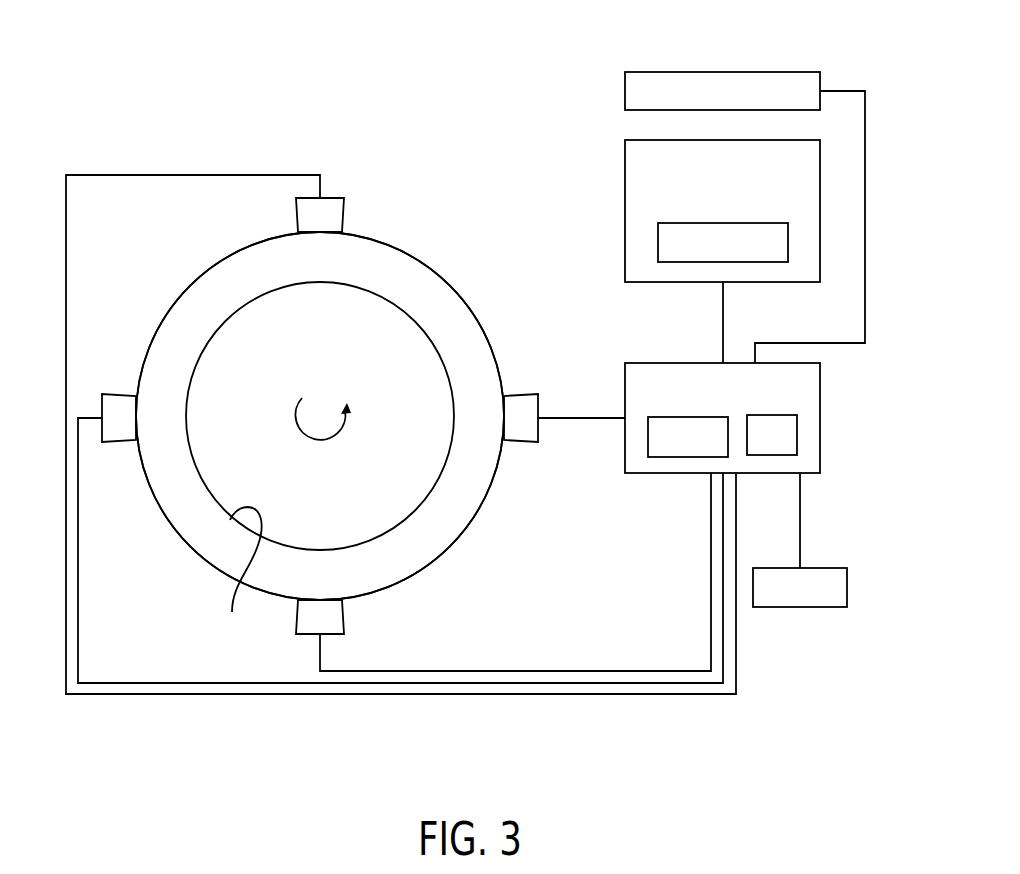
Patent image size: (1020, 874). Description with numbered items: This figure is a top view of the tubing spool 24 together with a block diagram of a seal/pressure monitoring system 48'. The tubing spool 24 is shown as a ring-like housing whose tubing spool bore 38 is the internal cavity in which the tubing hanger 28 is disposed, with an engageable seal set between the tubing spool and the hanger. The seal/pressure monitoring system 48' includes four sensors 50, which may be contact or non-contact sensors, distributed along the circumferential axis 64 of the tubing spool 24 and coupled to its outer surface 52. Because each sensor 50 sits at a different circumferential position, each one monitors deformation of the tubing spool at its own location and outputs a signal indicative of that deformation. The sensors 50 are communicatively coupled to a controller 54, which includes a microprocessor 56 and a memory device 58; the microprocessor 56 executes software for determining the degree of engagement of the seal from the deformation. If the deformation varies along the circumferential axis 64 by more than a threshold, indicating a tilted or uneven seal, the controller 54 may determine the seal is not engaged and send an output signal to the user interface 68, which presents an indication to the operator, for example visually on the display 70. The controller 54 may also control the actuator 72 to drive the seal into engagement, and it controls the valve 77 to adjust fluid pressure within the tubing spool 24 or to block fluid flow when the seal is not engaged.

The seal/pressure monitoring system 48' is at (511, 62).
The tubing spool 24 is at (421, 552).
The tubing hanger 28 is at (213, 470).
The tubing spool bore 38 is at (240, 574).
The sensors 50 is at (364, 188).
The outer surface 52 is at (453, 285).
The controller 54 is at (820, 400).
The microprocessor 56 is at (797, 432).
The memory device 58 is at (690, 458).
The circumferential axis 64 is at (310, 443).
The user interface 68 is at (625, 180).
The display 70 is at (658, 240).
The actuator 72 is at (625, 92).
The valve 77 is at (798, 607).